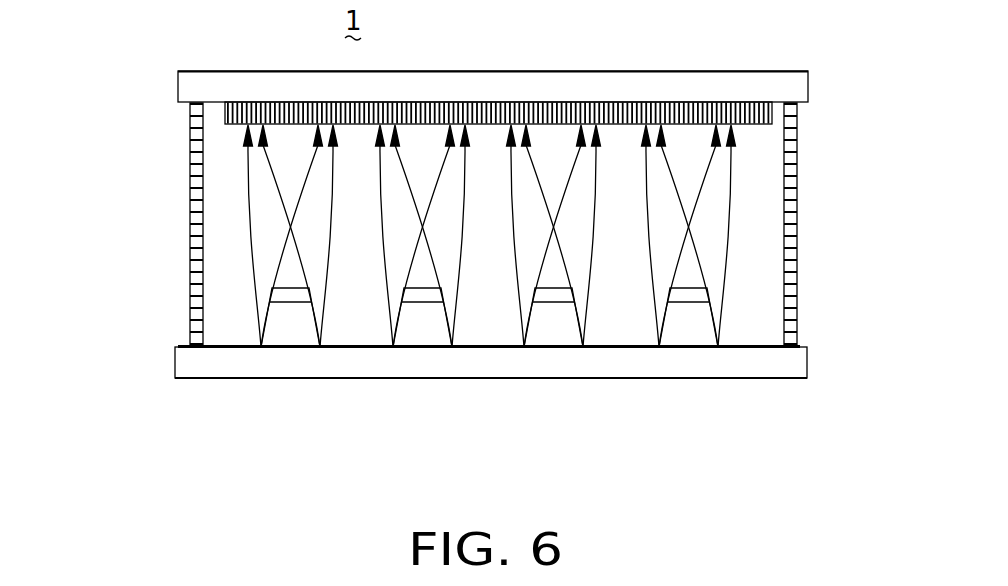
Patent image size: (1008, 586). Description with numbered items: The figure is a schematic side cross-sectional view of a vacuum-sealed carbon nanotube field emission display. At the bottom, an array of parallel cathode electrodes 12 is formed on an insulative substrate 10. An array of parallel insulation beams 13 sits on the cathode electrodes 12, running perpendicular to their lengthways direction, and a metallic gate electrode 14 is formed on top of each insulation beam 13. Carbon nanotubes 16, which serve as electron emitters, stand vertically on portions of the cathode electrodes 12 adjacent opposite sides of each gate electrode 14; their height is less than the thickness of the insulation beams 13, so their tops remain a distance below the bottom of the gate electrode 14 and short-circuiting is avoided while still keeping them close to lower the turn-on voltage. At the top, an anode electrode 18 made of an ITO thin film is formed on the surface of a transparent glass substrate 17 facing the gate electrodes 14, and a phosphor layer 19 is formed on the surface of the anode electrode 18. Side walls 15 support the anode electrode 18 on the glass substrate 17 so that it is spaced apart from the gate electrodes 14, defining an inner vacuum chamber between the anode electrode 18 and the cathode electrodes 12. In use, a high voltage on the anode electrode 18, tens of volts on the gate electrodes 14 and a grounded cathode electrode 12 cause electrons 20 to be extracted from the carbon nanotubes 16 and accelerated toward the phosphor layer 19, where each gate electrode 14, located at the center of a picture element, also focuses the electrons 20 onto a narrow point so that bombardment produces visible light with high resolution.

The insulative substrate 10 is at (800, 365).
The cathode electrodes 12 is at (803, 345).
The insulation beams 13 is at (418, 324).
The gate electrodes 14 is at (685, 295).
The side walls 15 is at (797, 168).
The carbon nanotubes 16 is at (257, 325).
The transparent glass substrate 17 is at (793, 85).
The anode electrode 18 is at (789, 104).
The phosphor layer 19 is at (443, 115).
The electrons 20 is at (248, 193).